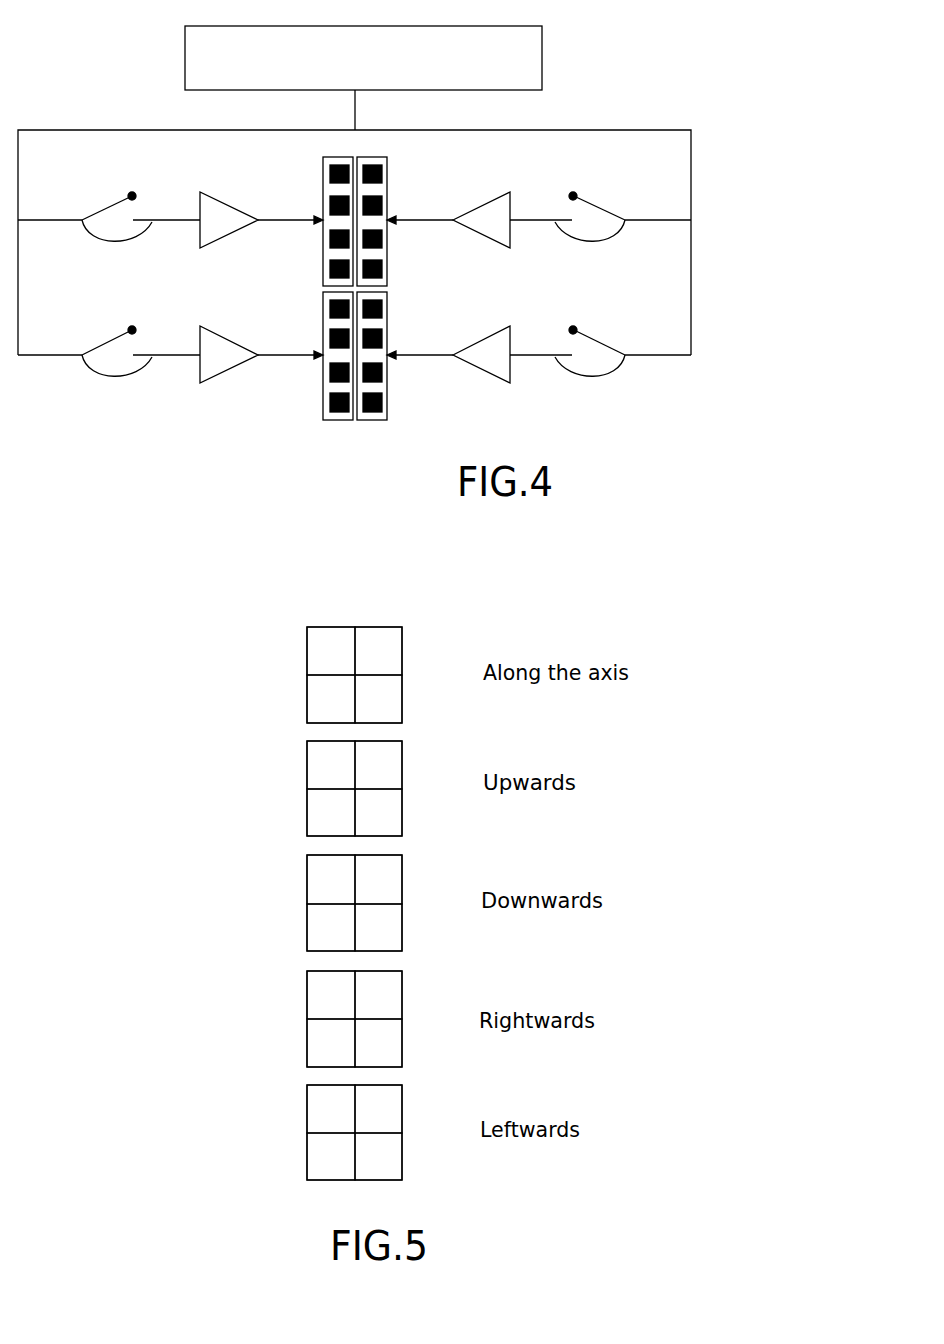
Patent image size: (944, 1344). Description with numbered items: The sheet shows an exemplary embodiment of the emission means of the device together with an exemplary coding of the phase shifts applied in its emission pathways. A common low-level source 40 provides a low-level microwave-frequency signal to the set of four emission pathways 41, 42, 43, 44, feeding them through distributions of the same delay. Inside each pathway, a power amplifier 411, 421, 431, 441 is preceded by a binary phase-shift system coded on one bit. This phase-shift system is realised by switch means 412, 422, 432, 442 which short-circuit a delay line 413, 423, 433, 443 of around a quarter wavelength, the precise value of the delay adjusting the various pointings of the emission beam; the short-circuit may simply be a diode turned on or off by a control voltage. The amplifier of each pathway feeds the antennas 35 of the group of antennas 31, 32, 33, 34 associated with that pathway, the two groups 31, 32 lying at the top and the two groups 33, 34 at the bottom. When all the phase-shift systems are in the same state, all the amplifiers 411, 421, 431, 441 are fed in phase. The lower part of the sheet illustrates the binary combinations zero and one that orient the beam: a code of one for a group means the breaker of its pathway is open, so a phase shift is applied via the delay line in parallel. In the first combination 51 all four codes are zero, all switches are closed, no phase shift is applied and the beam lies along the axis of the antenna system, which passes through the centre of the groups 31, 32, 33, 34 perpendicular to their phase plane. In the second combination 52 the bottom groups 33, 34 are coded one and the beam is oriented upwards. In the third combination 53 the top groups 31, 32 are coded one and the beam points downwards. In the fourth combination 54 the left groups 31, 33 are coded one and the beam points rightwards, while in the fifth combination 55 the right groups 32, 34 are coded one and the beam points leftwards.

In FIG. 4, the common low-level source 40 is at (542, 58).
In FIG. 4, the emission pathway 41 is at (30, 220).
In FIG. 4, the power amplifier 411 is at (222, 202).
In FIG. 4, the switch means 412 is at (114, 196).
In FIG. 4, the delay line 413 is at (108, 242).
In FIG. 4, the emission pathway 42 is at (640, 218).
In FIG. 4, the power amplifier 421 is at (512, 208).
In FIG. 4, the switch means 422 is at (585, 196).
In FIG. 4, the delay line 423 is at (606, 240).
In FIG. 4, the emission pathway 43 is at (30, 355).
In FIG. 4, the power amplifier 431 is at (222, 337).
In FIG. 4, the switch means 432 is at (116, 332).
In FIG. 4, the delay line 433 is at (105, 378).
In FIG. 4, the emission pathway 44 is at (640, 353).
In FIG. 4, the power amplifier 441 is at (512, 342).
In FIG. 4, the switch means 442 is at (585, 330).
In FIG. 4, the delay line 443 is at (606, 374).
In FIG. 4, the group of antennas 31 is at (323, 193).
In FIG. 5, the group of antennas 31 is at (308, 660).
In FIG. 4, the group of antennas 32 is at (387, 207).
In FIG. 5, the group of antennas 32 is at (392, 665).
In FIG. 4, the group of antennas 33 is at (338, 420).
In FIG. 5, the group of antennas 33 is at (307, 712).
In FIG. 4, the group of antennas 34 is at (387, 343).
In FIG. 5, the group of antennas 34 is at (392, 713).
In FIG. 4, the antennas 35 is at (387, 268).
In FIG. 5, the first combination 51 is at (307, 723).
In FIG. 5, the second combination 52 is at (307, 836).
In FIG. 5, the third combination 53 is at (307, 951).
In FIG. 5, the fourth combination 54 is at (307, 1067).
In FIG. 5, the fifth combination 55 is at (307, 1180).